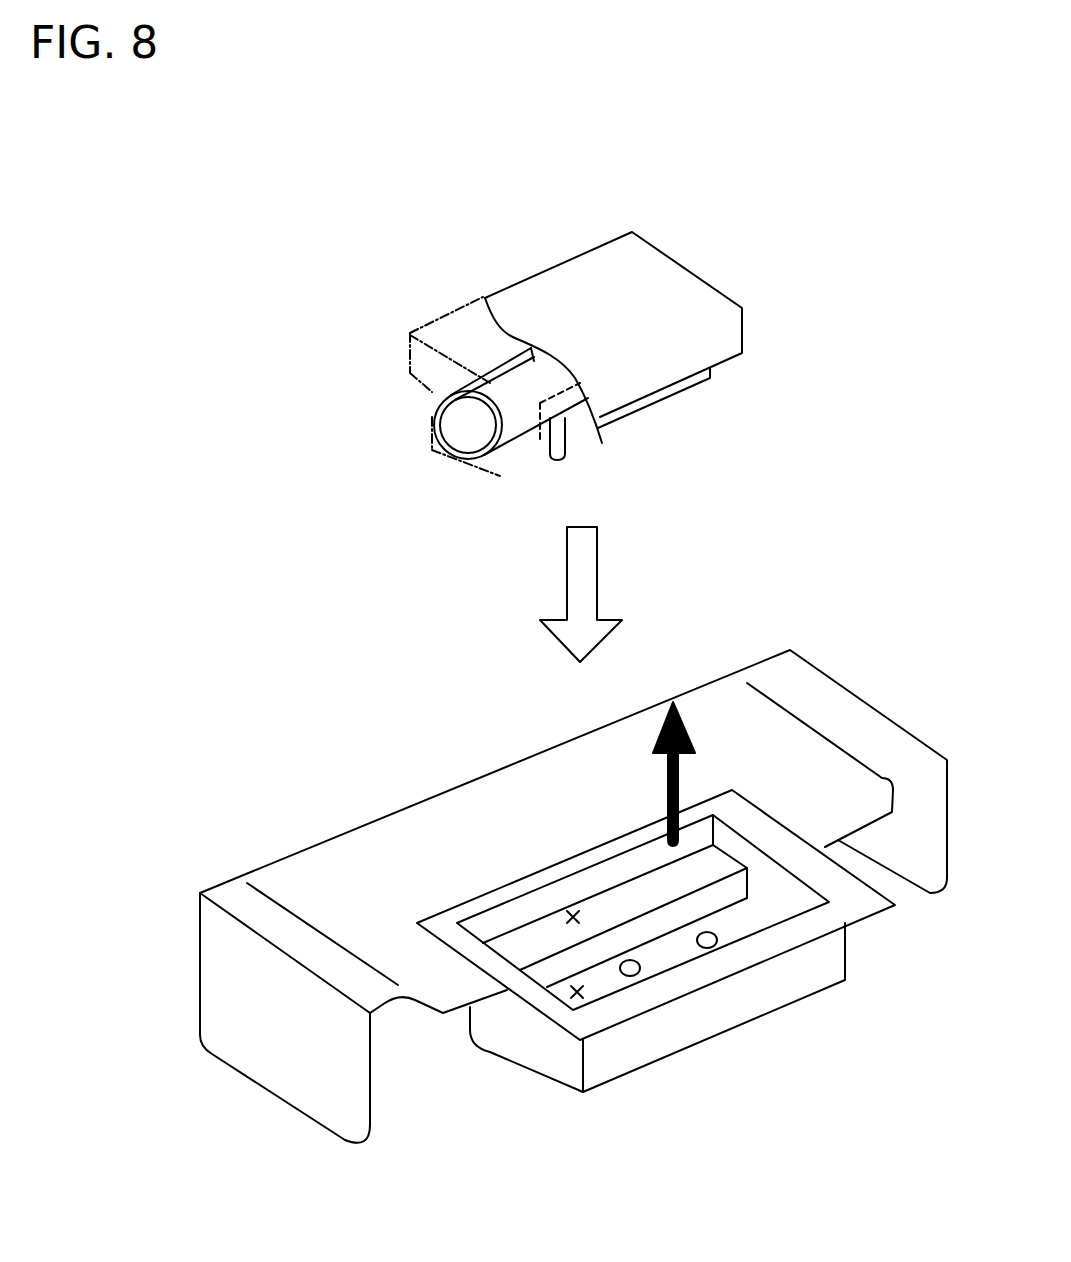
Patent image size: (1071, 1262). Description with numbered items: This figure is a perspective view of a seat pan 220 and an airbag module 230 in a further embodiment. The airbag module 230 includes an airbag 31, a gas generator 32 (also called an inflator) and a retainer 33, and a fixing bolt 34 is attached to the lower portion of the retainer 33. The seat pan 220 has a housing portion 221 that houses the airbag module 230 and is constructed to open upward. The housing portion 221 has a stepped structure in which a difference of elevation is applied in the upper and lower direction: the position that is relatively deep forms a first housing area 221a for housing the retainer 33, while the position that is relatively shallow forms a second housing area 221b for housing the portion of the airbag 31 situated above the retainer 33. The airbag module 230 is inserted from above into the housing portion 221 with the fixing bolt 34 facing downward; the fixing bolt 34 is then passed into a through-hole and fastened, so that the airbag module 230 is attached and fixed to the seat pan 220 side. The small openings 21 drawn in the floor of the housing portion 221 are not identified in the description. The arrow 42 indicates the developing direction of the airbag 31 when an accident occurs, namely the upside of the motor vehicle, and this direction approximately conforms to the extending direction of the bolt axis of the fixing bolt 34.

The airbag module 230 is at (538, 273).
The airbag 31 is at (695, 342).
The gas generator 32 is at (468, 417).
The retainer 33 is at (433, 450).
The fixing bolt 34 is at (549, 462).
The seat pan 220 is at (317, 842).
The housing portion 221 is at (558, 680).
The first housing area 221a is at (575, 990).
The second housing area 221b is at (573, 915).
The holes 21 is at (633, 978).
The arrow 42 is at (698, 774).